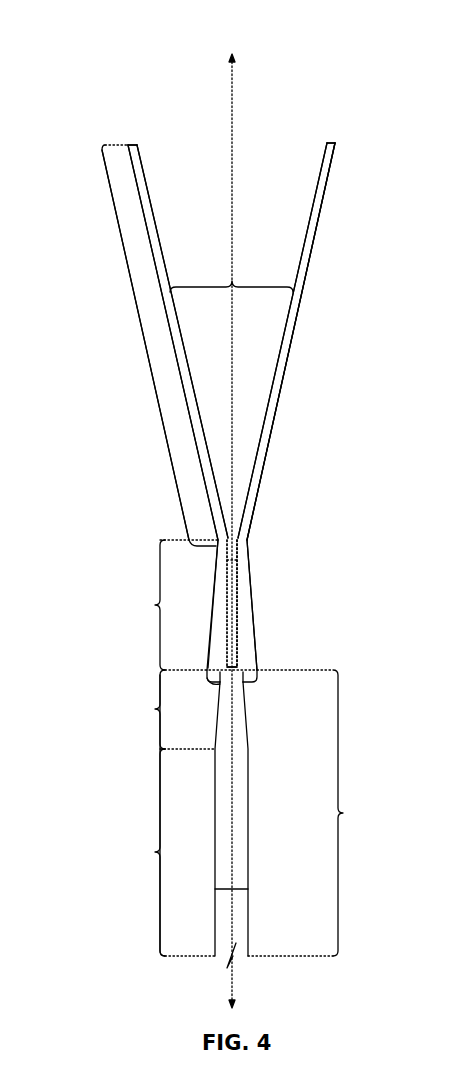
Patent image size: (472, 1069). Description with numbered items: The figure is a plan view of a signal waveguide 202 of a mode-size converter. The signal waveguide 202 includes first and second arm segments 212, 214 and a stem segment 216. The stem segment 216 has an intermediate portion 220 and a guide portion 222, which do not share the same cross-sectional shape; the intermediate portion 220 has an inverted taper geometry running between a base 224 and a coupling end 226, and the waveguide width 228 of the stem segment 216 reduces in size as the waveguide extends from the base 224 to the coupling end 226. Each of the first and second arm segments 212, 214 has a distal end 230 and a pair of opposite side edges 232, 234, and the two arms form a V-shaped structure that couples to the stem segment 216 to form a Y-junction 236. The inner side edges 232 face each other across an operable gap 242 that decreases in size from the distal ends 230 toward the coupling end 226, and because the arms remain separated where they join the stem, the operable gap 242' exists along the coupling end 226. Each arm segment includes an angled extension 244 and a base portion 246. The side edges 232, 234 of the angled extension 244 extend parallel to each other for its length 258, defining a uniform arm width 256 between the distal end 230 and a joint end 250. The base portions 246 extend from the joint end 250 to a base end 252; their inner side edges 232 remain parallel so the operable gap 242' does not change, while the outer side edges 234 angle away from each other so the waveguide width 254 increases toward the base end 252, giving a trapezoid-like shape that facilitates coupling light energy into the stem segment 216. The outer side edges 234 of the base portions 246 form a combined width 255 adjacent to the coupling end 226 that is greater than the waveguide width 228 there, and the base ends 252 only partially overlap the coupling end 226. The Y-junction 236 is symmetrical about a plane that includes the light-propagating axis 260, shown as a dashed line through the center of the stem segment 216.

The signal waveguide 202 is at (348, 49).
The light-propagating axis 260 is at (232, 87).
The distal end 230 is at (131, 140).
The first arm segment 212 is at (145, 168).
The second arm segment 214 is at (319, 170).
The side edge 232 is at (165, 248).
The side edge 234 is at (143, 226).
The operable gap 242 is at (231, 260).
The angled extension 244 is at (146, 352).
The length 258 is at (146, 352).
The arm width 256 is at (287, 368).
The Y-junction 236 is at (329, 458).
The joint end 250 is at (244, 540).
The operable gap 242' is at (278, 581).
The waveguide width 254 is at (240, 605).
The coupling end 226 is at (236, 665).
The base end 252 is at (258, 678).
The base 224 is at (240, 739).
The combined width 255 is at (220, 683).
The base portion 246 is at (154, 604).
The intermediate portion 220 is at (154, 709).
The guide portion 222 is at (154, 853).
The stem segment 216 is at (344, 813).
The waveguide width 228 is at (236, 889).